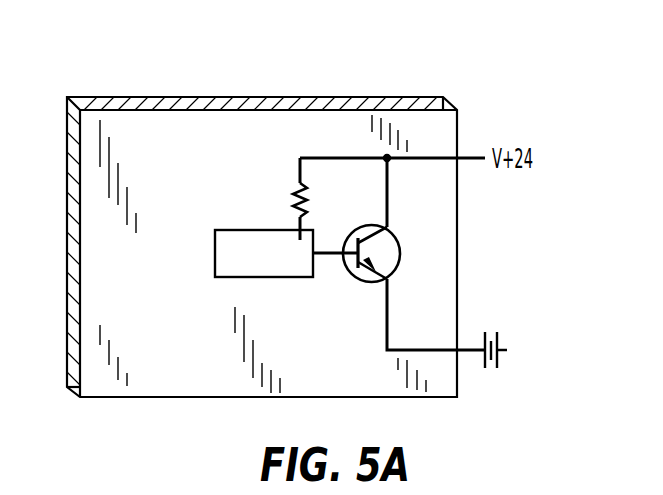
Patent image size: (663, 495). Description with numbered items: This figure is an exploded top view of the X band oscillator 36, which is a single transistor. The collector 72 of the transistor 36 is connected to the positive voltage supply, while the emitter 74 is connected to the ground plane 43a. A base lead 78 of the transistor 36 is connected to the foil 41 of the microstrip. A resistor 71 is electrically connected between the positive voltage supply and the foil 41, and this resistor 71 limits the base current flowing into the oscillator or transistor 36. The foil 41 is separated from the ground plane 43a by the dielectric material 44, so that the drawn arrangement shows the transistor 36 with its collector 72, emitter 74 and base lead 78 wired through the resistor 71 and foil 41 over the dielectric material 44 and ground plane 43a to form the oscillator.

The dielectric material 44 is at (232, 123).
The ground plane 43a is at (507, 350).
The resistor 71 is at (292, 203).
The foil 41 is at (243, 230).
The base lead 78 is at (331, 256).
The oscillator 36 is at (399, 250).
The collector 72 is at (387, 199).
The emitter 74 is at (387, 318).